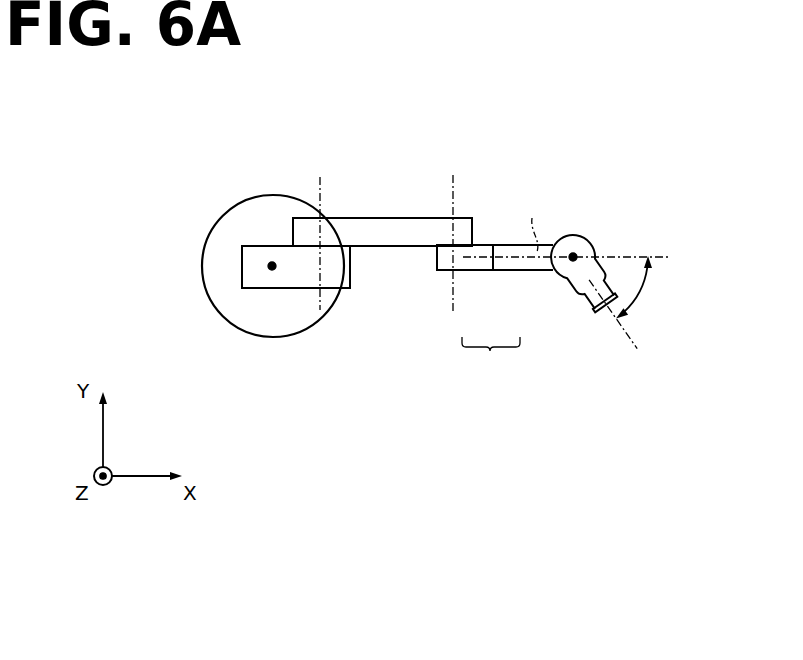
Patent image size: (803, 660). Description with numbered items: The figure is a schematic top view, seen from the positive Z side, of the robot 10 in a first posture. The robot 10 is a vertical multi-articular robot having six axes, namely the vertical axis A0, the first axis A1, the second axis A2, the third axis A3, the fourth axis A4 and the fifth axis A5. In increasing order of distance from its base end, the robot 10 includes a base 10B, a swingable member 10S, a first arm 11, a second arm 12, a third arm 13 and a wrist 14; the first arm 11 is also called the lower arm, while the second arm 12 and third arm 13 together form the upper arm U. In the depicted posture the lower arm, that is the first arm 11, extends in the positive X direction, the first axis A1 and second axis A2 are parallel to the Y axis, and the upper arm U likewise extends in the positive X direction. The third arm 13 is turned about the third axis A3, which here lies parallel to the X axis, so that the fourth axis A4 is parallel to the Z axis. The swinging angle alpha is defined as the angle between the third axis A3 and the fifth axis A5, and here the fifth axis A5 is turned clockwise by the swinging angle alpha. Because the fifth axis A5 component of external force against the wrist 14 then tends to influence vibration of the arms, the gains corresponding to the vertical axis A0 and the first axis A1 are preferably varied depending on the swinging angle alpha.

The robot 10 is at (468, 116).
The base 10B is at (277, 312).
The swingable member 10S is at (342, 267).
The first arm 11 is at (402, 232).
The second arm 12 is at (470, 260).
The third arm 13 is at (518, 263).
The wrist 14 is at (572, 277).
The upper arm U is at (491, 357).
The vertical axis A0 is at (270, 265).
The first axis A1 is at (323, 199).
The second axis A2 is at (457, 200).
The third axis A3 is at (543, 222).
The fourth axis A4 is at (575, 255).
The fifth axis A5 is at (627, 343).
The swinging angle alpha is at (645, 287).